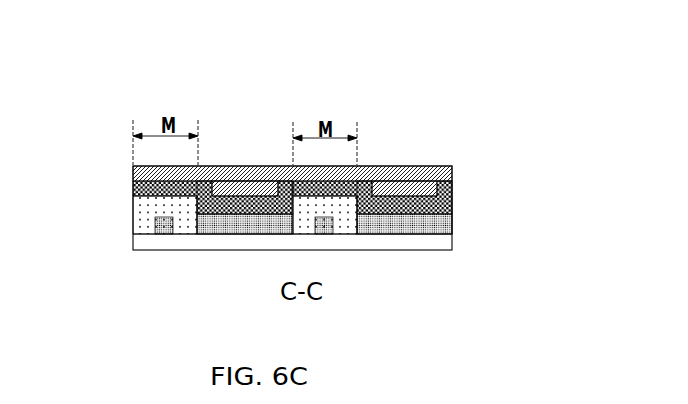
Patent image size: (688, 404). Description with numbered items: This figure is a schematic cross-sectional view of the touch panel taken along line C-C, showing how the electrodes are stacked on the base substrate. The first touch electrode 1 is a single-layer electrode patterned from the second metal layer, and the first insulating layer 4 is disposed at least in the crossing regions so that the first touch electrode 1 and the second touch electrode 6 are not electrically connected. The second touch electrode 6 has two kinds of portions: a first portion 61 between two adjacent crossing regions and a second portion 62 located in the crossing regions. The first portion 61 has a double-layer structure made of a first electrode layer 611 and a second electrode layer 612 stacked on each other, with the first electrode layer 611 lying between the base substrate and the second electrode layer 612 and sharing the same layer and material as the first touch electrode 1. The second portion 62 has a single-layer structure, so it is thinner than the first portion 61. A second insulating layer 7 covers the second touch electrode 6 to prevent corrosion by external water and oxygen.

The first touch electrode 1 is at (158, 220).
The first insulating layer 4 is at (143, 224).
The second touch electrode 6 is at (324, 158).
The first portion 61 is at (252, 165).
The second portion 62 is at (345, 180).
The first electrode layer 611 is at (267, 223).
The second electrode layer 612 is at (220, 165).
The second insulating layer 7 is at (420, 167).